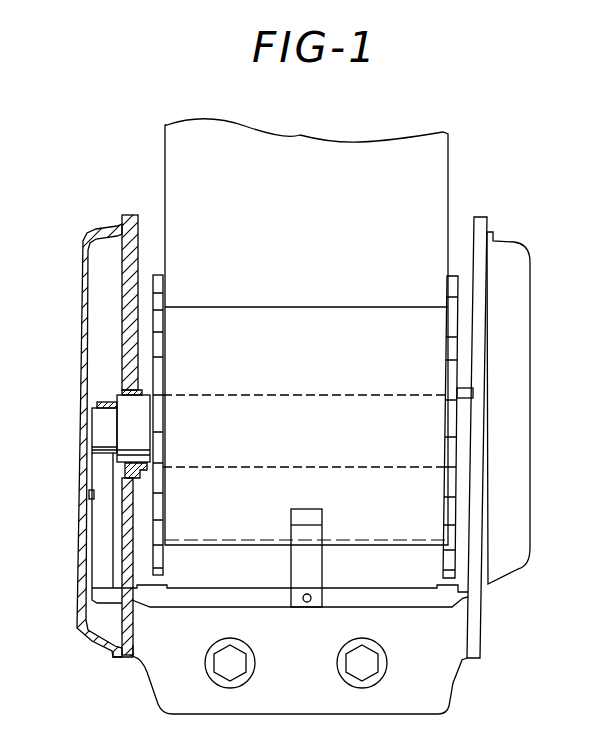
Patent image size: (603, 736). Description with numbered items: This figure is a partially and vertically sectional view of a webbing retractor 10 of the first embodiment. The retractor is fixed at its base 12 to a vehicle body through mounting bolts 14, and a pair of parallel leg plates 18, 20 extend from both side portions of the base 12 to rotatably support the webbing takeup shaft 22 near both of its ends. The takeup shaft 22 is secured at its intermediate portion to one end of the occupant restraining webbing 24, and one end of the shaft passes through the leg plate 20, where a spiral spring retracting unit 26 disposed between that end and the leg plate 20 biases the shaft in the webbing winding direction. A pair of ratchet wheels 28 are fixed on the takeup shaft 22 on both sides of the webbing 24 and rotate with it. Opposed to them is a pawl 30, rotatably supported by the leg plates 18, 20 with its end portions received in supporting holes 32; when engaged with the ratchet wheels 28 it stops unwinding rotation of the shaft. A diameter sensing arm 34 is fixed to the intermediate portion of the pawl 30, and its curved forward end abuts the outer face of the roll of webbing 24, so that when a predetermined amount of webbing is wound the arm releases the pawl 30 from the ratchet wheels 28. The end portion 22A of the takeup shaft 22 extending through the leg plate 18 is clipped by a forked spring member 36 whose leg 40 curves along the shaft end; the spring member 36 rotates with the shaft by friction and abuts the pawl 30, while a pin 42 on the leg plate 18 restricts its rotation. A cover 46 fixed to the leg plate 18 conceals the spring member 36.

The webbing retractor 10 is at (511, 211).
The base 12 is at (447, 676).
The mounting bolts 14 is at (240, 669).
The leg plate 18 is at (128, 656).
The leg plate 20 is at (481, 635).
The webbing takeup shaft 22 is at (292, 395).
The end portion of the takeup shaft 22A is at (98, 425).
The occupant restraining webbing 24 is at (442, 160).
The spiral spring retracting unit 26 is at (520, 360).
The ratchet wheels 28 is at (165, 352).
The pawl 30 is at (273, 607).
The supporting holes 32 is at (127, 588).
The diameter sensing arm 34 is at (322, 516).
The spring member 36 is at (103, 468).
The leg 40 is at (103, 558).
The pin 42 is at (92, 497).
The cover 46 is at (80, 352).